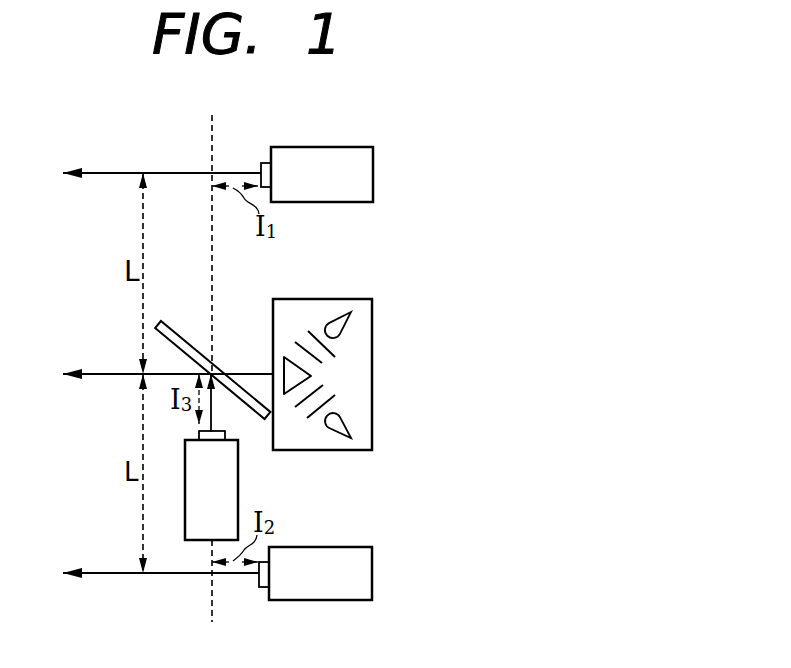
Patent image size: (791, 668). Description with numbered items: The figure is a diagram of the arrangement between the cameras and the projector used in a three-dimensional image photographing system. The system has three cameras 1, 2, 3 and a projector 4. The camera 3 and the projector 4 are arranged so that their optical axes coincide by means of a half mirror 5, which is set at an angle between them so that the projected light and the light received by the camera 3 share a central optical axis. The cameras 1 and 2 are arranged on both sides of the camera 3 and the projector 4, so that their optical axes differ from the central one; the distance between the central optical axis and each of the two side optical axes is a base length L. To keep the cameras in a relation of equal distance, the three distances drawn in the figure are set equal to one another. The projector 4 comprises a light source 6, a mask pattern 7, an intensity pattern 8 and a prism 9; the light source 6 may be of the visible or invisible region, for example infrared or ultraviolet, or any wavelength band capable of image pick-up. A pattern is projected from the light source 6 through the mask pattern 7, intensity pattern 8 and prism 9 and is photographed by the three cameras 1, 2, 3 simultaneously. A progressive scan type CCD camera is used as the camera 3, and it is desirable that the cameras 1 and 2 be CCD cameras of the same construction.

The camera 1 is at (345, 147).
The camera 2 is at (346, 547).
The camera 3 is at (238, 480).
The projector 4 is at (347, 299).
The half mirror 5 is at (185, 340).
The light source 6 is at (345, 327).
The mask pattern 7 is at (309, 330).
The intensity pattern 8 is at (304, 346).
The prism 9 is at (311, 368).